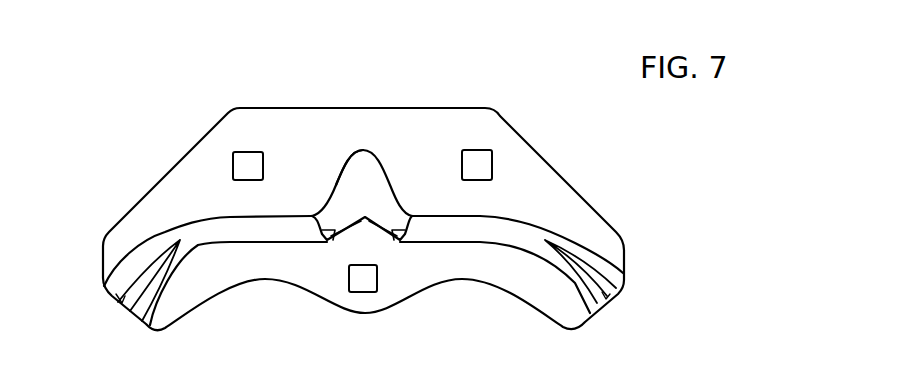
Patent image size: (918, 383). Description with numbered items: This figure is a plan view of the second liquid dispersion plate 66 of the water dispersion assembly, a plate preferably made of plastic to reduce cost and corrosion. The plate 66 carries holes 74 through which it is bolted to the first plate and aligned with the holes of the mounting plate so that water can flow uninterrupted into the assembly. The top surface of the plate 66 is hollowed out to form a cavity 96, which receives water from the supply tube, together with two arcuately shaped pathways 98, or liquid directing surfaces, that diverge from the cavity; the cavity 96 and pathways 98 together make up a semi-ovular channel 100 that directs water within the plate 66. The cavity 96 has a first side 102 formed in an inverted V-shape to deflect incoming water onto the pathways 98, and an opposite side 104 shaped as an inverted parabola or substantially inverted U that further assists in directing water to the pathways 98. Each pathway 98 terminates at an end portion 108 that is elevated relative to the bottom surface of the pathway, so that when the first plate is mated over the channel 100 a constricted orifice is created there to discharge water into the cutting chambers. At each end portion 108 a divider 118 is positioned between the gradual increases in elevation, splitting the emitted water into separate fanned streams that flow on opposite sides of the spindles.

The second liquid dispersion plate 66 is at (455, 108).
The holes 74 is at (240, 158).
The cavity 96 is at (371, 180).
The pathways 98 is at (262, 228).
The semi-ovular channel 100 is at (183, 272).
The first side 102 is at (385, 235).
The side 104 is at (341, 172).
The end portions 108 is at (565, 240).
The divider 118 is at (608, 297).